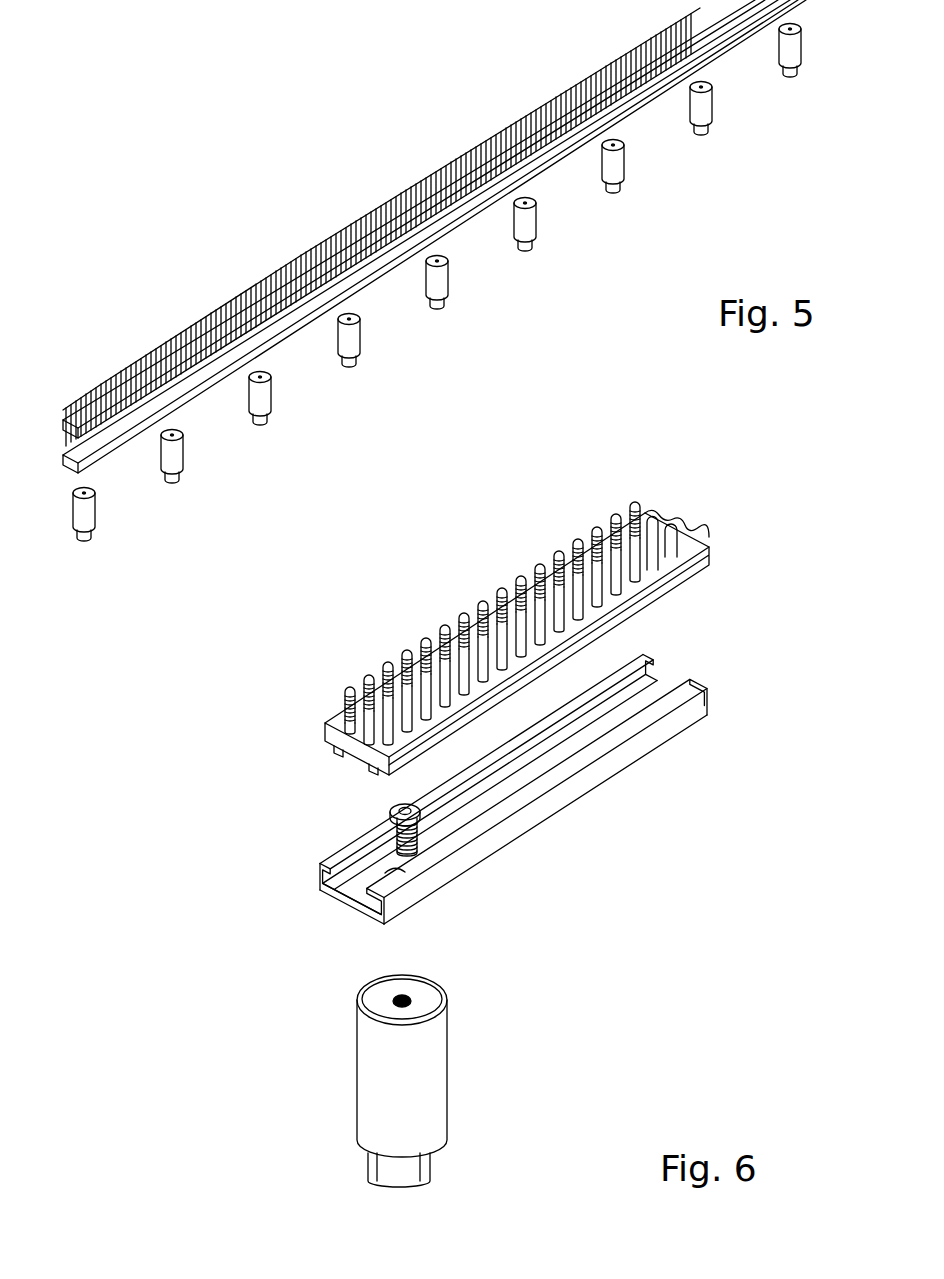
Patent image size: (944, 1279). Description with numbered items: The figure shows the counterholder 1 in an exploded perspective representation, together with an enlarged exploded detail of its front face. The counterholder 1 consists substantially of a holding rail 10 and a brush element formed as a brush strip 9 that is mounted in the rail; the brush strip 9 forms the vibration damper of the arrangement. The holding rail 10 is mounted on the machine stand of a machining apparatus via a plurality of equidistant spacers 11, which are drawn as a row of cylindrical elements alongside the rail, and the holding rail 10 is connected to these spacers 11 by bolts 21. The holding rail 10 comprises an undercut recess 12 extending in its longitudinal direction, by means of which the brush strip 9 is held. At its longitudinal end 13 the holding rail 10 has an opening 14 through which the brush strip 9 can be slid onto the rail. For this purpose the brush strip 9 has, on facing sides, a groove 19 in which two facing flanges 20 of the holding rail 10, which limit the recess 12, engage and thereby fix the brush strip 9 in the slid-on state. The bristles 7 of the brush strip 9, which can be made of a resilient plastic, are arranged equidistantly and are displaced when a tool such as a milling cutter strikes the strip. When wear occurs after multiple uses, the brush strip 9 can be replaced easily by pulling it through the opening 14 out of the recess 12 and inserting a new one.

In FIG. 5, the counterholder 1 is at (360, 144).
In FIG. 6, the bristles 7 is at (346, 718).
In FIG. 5, the brush strip 9 is at (65, 432).
In FIG. 6, the brush strip 9 is at (357, 778).
In FIG. 5, the holding rail 10 is at (68, 467).
In FIG. 6, the holding rail 10 is at (498, 840).
In FIG. 5, the spacers 11 is at (90, 511).
In FIG. 6, the spacers 11 is at (413, 1080).
In FIG. 6, the undercut recess 12 is at (370, 875).
In FIG. 6, the longitudinal end 13 is at (367, 907).
In FIG. 6, the opening 14 is at (333, 897).
In FIG. 6, the groove 19 is at (333, 753).
In FIG. 6, the flanges 20 is at (338, 862).
In FIG. 6, the bolts 21 is at (440, 857).